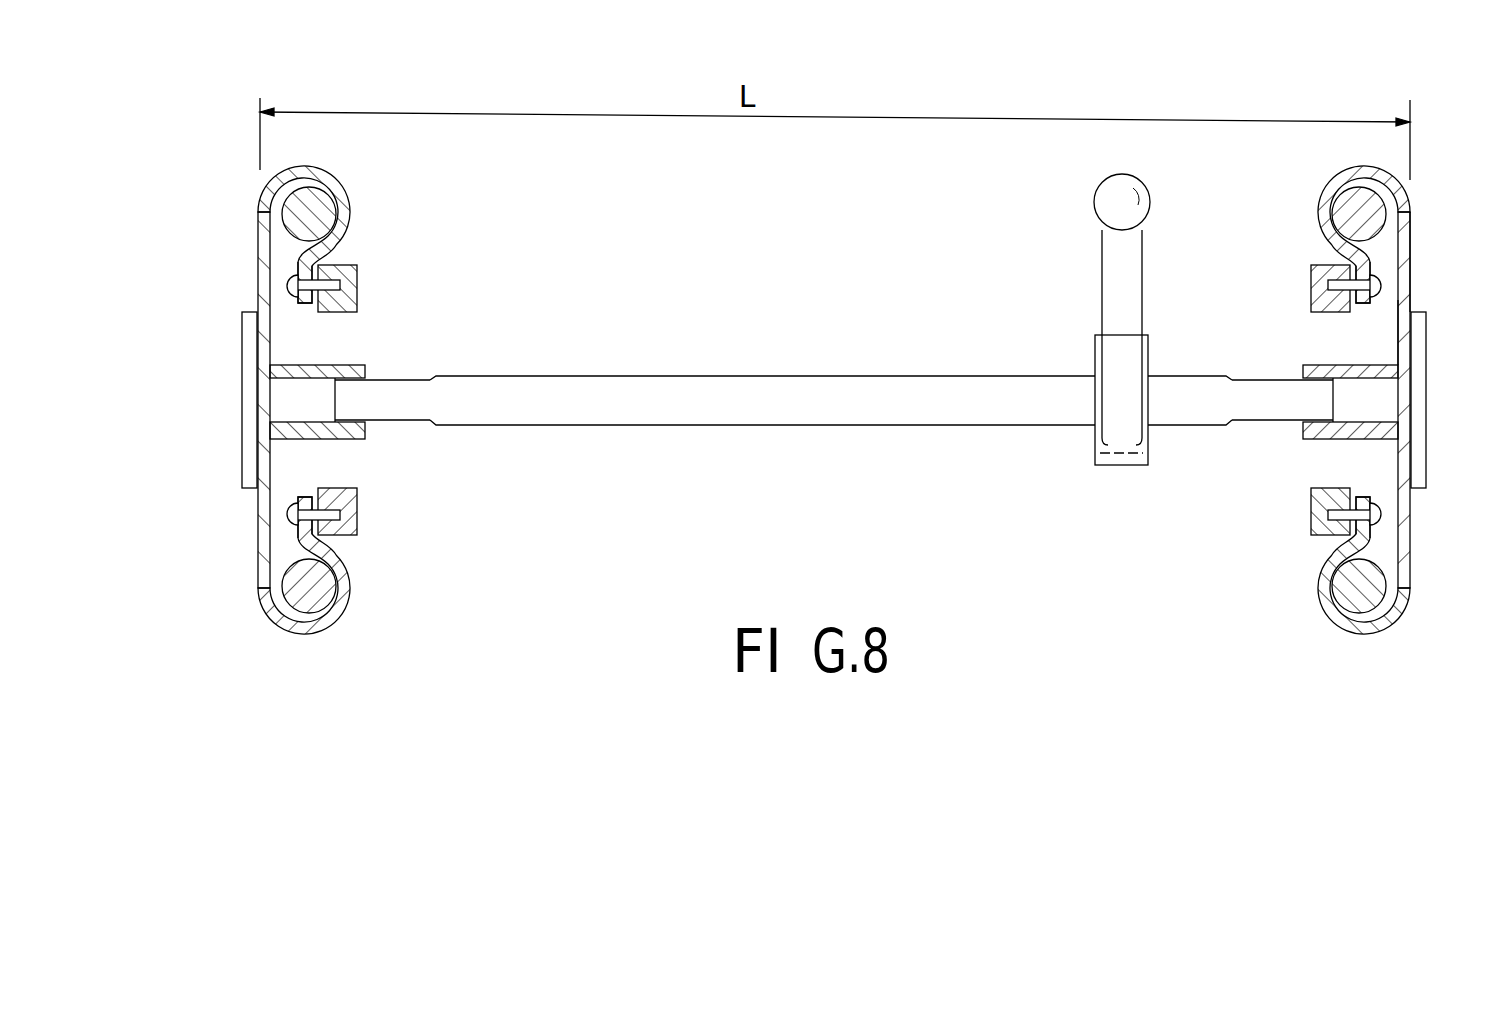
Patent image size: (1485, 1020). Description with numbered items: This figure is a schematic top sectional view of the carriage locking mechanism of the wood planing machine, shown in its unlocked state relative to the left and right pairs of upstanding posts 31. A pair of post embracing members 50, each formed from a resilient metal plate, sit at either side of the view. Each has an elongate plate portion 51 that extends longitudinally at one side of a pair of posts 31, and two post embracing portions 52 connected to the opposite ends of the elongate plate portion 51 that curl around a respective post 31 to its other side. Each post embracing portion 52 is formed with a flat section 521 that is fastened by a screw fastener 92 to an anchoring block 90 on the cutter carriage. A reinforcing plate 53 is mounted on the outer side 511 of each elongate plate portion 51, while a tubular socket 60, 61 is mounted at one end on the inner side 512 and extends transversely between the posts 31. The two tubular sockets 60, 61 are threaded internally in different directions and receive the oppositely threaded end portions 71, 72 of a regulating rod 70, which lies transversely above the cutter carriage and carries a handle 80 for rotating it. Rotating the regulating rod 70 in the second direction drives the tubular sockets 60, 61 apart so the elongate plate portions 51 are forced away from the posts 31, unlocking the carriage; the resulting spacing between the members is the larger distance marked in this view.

The upstanding posts 31 is at (321, 208).
The post embracing members 50 is at (1410, 261).
The elongate plate portion 51 is at (260, 256).
The outer side 511 is at (1413, 348).
The inner side 512 is at (1395, 333).
The post embracing portions 52 is at (350, 205).
The flat section 521 is at (293, 498).
The reinforcing plate 53 is at (249, 348).
The tubular socket 60 is at (1362, 440).
The tubular socket 61 is at (321, 438).
The regulating rod 70 is at (781, 370).
The end portion 71 is at (1250, 375).
The end portion 72 is at (405, 376).
The handle 80 is at (1150, 355).
The anchoring blocks 90 is at (362, 522).
The screw fasteners 92 is at (290, 513).